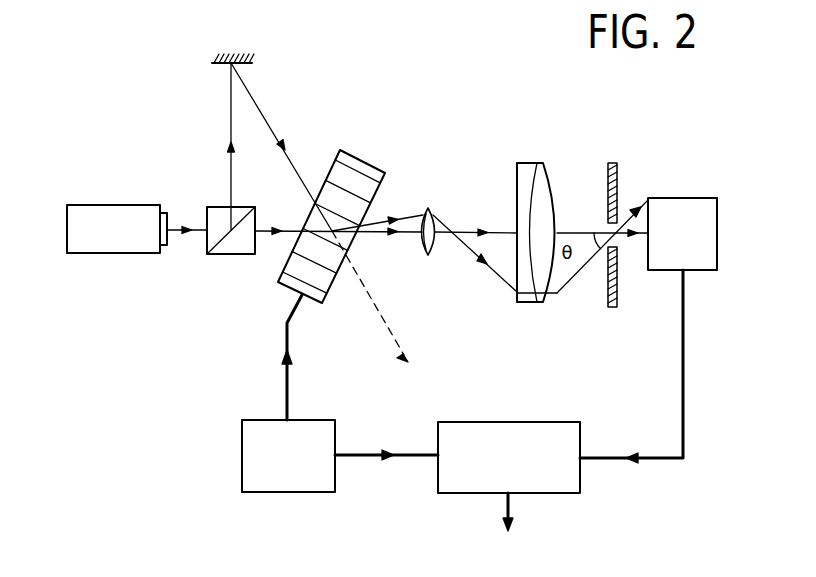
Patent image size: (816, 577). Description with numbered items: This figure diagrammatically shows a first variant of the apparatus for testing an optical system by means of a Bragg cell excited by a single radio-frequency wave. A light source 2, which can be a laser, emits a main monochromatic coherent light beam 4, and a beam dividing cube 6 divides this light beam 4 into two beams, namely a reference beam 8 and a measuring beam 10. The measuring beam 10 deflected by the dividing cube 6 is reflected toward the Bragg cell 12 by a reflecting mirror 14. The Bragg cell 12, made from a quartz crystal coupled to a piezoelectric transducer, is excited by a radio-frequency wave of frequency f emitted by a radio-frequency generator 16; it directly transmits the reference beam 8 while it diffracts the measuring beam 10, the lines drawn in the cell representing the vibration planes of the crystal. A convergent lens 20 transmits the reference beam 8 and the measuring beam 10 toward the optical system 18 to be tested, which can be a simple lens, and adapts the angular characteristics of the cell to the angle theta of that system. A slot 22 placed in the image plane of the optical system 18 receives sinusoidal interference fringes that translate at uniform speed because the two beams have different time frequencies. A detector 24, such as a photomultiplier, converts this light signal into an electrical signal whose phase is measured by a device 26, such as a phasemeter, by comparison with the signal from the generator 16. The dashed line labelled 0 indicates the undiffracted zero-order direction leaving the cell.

The light source 2 is at (91, 218).
The main monochromatic coherent light beam 4 is at (167, 236).
The beam dividing cube 6 is at (222, 247).
The reference beam 8 is at (260, 232).
The measuring beam 10 is at (231, 133).
The Bragg cell 12 is at (345, 168).
The reflecting mirror 14 is at (212, 66).
The radio-frequency generator 16 is at (290, 472).
The optical system 18 is at (527, 163).
The convergent lens 20 is at (428, 208).
The slot 22 is at (612, 163).
The detector 24 is at (667, 258).
The device 26 is at (563, 485).
The zero-order beam 0 is at (377, 307).